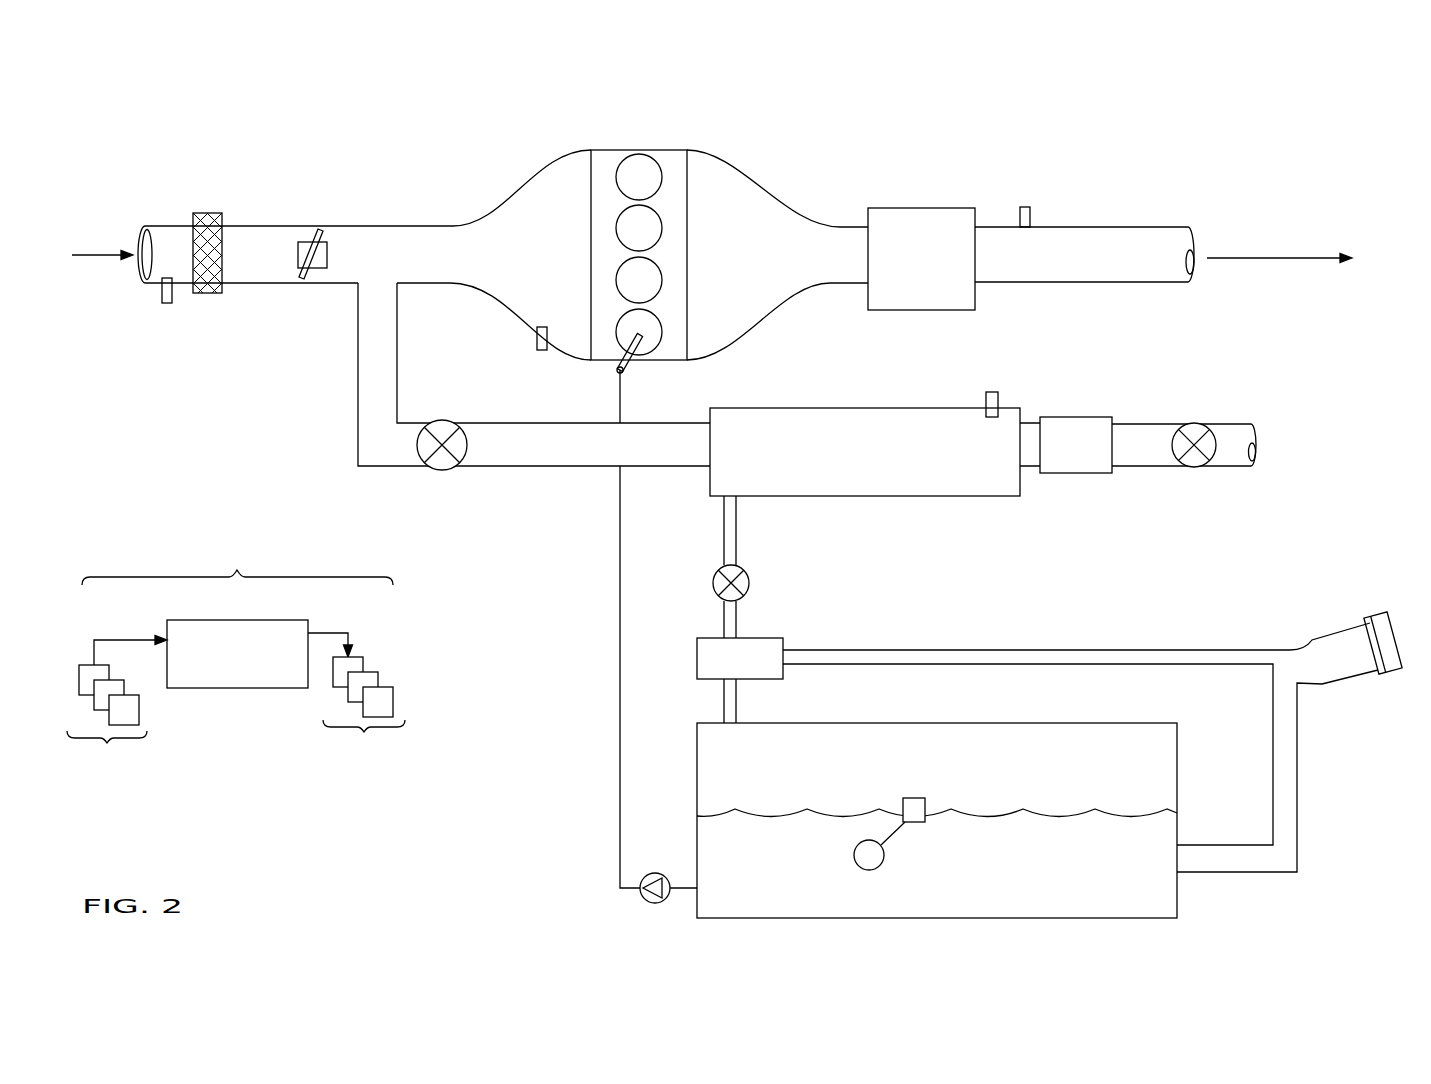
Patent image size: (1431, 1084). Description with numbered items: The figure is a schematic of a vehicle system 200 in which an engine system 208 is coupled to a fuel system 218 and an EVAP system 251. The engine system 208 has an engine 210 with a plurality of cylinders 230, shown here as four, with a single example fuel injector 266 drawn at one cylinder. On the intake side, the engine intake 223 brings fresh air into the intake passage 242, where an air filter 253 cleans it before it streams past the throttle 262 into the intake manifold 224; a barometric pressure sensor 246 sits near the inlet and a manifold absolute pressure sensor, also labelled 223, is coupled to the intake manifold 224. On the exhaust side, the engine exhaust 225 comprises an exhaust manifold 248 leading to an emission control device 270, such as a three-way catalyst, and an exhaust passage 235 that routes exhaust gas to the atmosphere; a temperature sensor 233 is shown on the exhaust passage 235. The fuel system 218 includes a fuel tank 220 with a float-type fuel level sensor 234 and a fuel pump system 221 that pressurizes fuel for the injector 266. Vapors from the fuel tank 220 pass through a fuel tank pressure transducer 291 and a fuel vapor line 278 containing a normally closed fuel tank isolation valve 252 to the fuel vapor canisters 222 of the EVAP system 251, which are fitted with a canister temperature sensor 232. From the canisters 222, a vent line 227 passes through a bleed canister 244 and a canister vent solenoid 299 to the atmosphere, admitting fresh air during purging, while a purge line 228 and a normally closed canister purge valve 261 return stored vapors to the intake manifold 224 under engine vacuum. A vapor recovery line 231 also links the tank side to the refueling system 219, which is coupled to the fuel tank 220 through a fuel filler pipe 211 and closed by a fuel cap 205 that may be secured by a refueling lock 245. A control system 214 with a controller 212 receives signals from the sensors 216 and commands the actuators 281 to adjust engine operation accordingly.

The vehicle system 200 is at (1357, 122).
The engine system 208 is at (1249, 162).
The engine intake 223 is at (445, 185).
The intake manifold 224 is at (494, 255).
The engine 210 is at (687, 280).
The cylinders 230 is at (662, 172).
The fuel injector 266 is at (628, 371).
The exhaust manifold 248 is at (777, 255).
The engine exhaust 225 is at (845, 203).
The emission control device 270 is at (910, 208).
The temperature sensor 233 is at (1020, 217).
The exhaust passage 235 is at (1142, 227).
The air filter 253 is at (210, 213).
The throttle 262 is at (327, 264).
The intake passage 242 is at (273, 285).
The barometric pressure sensor 246 is at (166, 303).
The canister purge valve 261 is at (442, 420).
The purge line 228 is at (534, 374).
The canister temperature sensor 232 is at (988, 392).
The fuel vapor canisters 222 is at (993, 496).
The bleed canister 244 is at (1066, 445).
The vent line 227 is at (1173, 445).
The canister vent solenoid 299 is at (1190, 470).
The EVAP system 251 is at (1213, 386).
The fuel vapor line 278 is at (737, 548).
The fuel tank isolation valve 252 is at (715, 577).
The fuel tank pressure sensor 291 is at (758, 638).
The vapor recovery line 231 is at (1193, 650).
The fuel cap 205 is at (1380, 612).
The refueling system 219 is at (1341, 603).
The fuel filler pipe 211 is at (1297, 762).
The refueling lock 245 is at (1378, 675).
The fuel tank 220 is at (1177, 780).
The fuel level sensor 234 is at (917, 798).
The fuel pump system 221 is at (648, 873).
The fuel system 218 is at (1321, 875).
The control system 214 is at (237, 534).
The controller 212 is at (223, 654).
The sensors 216 is at (107, 728).
The actuators 281 is at (364, 719).